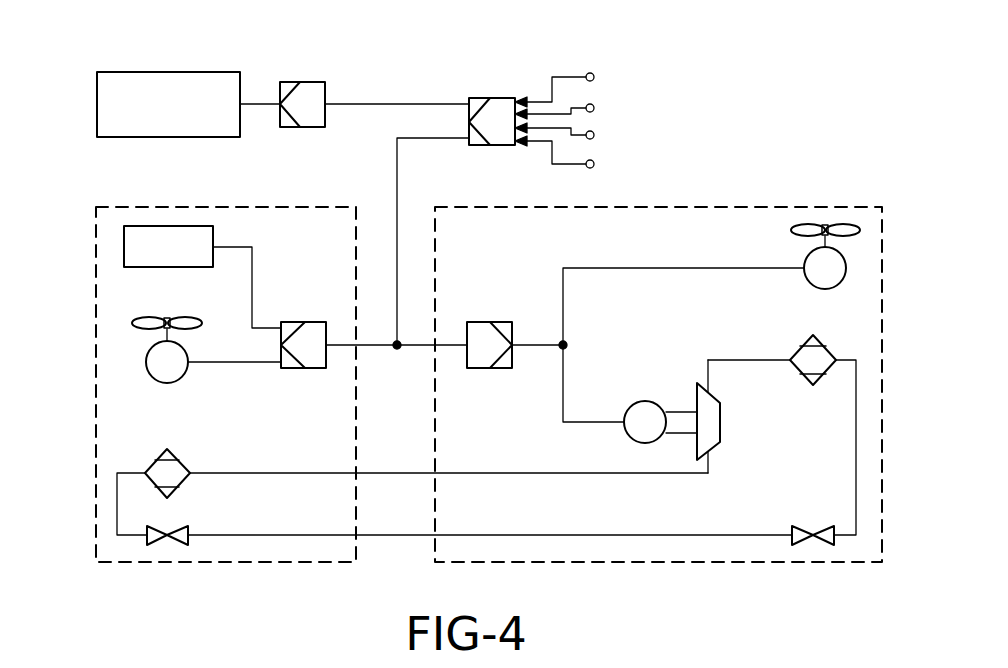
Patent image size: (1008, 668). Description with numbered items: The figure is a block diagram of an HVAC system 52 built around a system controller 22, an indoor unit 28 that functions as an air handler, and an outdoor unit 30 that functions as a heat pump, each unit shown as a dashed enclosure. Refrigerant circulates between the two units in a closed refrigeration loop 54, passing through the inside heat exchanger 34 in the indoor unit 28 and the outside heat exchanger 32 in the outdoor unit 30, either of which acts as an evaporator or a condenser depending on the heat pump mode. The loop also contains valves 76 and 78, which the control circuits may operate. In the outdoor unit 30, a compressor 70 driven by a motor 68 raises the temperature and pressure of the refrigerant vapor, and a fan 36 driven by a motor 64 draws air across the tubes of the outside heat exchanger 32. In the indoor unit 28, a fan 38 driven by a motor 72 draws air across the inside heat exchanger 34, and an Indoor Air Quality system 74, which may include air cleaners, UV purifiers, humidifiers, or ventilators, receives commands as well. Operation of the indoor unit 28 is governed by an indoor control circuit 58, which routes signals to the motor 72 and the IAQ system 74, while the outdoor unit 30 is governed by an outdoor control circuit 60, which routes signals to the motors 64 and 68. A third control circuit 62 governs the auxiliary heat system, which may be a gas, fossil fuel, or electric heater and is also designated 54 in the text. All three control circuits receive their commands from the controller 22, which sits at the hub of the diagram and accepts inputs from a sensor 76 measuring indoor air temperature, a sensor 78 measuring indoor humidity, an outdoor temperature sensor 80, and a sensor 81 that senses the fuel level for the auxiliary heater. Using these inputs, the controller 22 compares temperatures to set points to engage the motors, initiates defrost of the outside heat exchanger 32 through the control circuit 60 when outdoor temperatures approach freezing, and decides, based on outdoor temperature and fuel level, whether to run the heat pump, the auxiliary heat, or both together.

The controller 22 is at (500, 98).
The indoor unit 28 is at (235, 207).
The outdoor unit 30 is at (550, 207).
The outside heat exchanger 32 is at (803, 346).
The inside heat exchanger 34 is at (180, 462).
The fan 36 is at (791, 230).
The fan 38 is at (158, 316).
The HVAC system 52 is at (768, 147).
The closed refrigeration loop 54 is at (175, 72).
The indoor control circuit 58 is at (312, 322).
The outdoor control circuit 60 is at (483, 322).
The control circuit 62 is at (308, 82).
The motor 64 is at (812, 283).
The motor 68 is at (632, 406).
The compressor 70 is at (720, 422).
The motor 72 is at (180, 379).
The Indoor Air Quality (IAQ) system 74 is at (124, 247).
The valve 76 is at (594, 77).
The valve 78 is at (594, 164).
The outdoor temperature sensor 80 is at (594, 108).
The sensor 81 is at (594, 135).